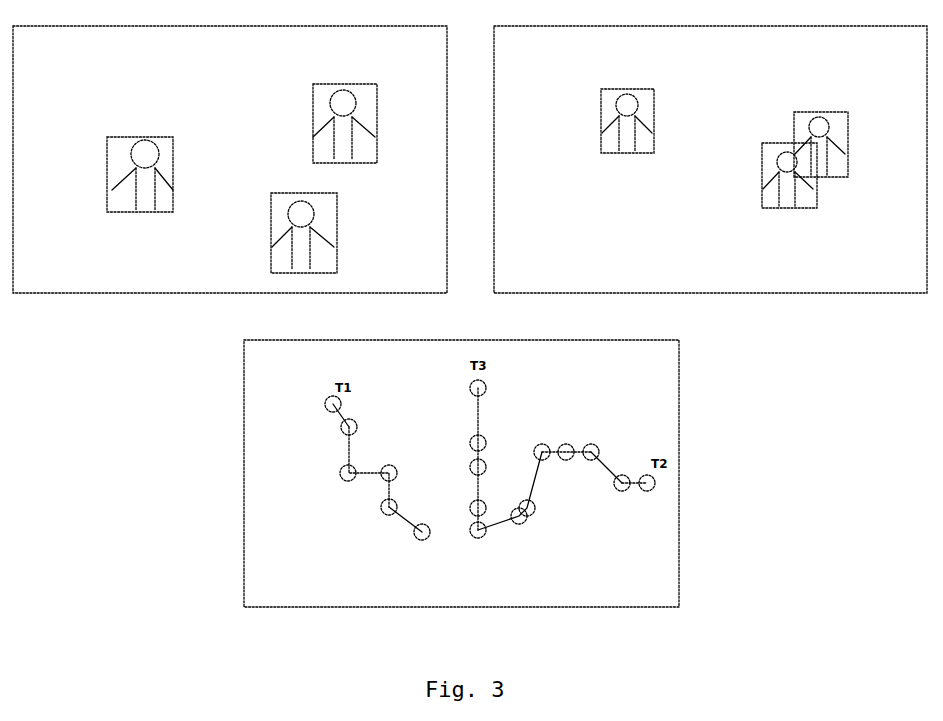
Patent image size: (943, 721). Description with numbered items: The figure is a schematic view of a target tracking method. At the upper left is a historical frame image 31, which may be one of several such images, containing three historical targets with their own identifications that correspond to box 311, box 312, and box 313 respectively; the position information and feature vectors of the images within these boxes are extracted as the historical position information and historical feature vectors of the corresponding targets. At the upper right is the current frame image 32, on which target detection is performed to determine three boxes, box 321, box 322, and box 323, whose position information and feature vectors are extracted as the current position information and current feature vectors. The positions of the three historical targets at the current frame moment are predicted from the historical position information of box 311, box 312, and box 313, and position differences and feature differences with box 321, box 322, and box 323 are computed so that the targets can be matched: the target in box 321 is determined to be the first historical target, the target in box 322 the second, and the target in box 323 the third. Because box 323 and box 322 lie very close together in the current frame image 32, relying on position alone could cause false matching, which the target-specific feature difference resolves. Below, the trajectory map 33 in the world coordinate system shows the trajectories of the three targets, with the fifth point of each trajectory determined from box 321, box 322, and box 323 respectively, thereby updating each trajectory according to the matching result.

The historical frame image 31 is at (230, 159).
The current frame image 32 is at (710, 159).
The trajectory map 33 is at (461, 473).
The box 311 is at (145, 136).
The box 312 is at (344, 84).
The box 313 is at (302, 193).
The box 321 is at (639, 89).
The box 322 is at (830, 112).
The box 323 is at (769, 145).